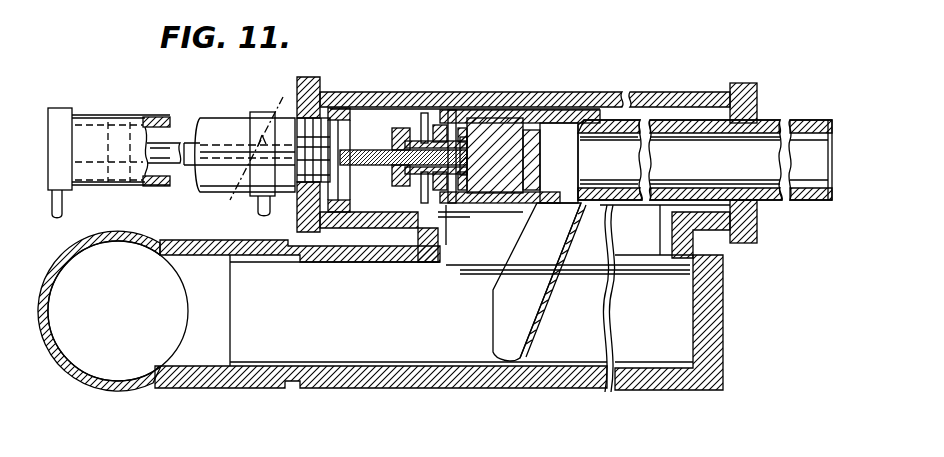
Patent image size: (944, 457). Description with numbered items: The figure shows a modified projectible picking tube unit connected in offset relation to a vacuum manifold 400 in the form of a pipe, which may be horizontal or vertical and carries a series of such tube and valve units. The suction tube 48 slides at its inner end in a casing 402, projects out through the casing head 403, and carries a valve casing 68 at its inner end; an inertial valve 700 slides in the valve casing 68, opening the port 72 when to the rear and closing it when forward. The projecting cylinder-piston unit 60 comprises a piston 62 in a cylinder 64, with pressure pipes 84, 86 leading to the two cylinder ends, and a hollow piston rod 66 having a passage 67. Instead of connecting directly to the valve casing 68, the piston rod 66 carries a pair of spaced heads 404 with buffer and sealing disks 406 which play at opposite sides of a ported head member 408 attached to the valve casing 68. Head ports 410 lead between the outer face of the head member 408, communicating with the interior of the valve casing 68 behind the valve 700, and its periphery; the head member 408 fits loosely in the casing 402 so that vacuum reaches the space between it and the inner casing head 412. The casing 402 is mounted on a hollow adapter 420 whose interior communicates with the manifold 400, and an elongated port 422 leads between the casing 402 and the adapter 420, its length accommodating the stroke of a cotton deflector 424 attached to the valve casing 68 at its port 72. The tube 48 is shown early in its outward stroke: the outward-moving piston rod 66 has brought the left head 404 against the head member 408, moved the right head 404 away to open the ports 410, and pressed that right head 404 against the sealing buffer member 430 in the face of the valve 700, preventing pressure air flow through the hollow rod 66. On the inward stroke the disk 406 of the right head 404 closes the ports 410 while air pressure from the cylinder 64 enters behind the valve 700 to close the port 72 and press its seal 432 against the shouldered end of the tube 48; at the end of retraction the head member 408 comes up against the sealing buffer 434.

The suction tube 48 is at (698, 172).
The projecting cylinder-piston unit 60 is at (246, 106).
The piston 62 is at (118, 130).
The cylinder 64 is at (220, 124).
The piston rod 66 is at (285, 93).
The passage 67 is at (240, 186).
The valve casing 68 is at (476, 208).
The port 72 is at (541, 196).
The pressure pipe 84 is at (257, 208).
The pressure pipe 86 is at (64, 210).
The vacuum manifold 400 is at (138, 319).
The casing 402 is at (654, 92).
The casing head 403 is at (758, 104).
The spaced heads 404 is at (400, 132).
The buffer and sealing disks 406 is at (431, 110).
The ported head member 408 is at (462, 110).
The head ports 410 is at (452, 112).
The inner casing head 412 is at (316, 86).
The hollow adapter 420 is at (574, 390).
The elongated port 422 is at (591, 263).
The cotton deflector 424 is at (530, 304).
The sealing buffer member 430 is at (491, 155).
The seal 432 is at (536, 168).
The sealing buffer 434 is at (356, 110).
The inertial valve 700 is at (522, 126).